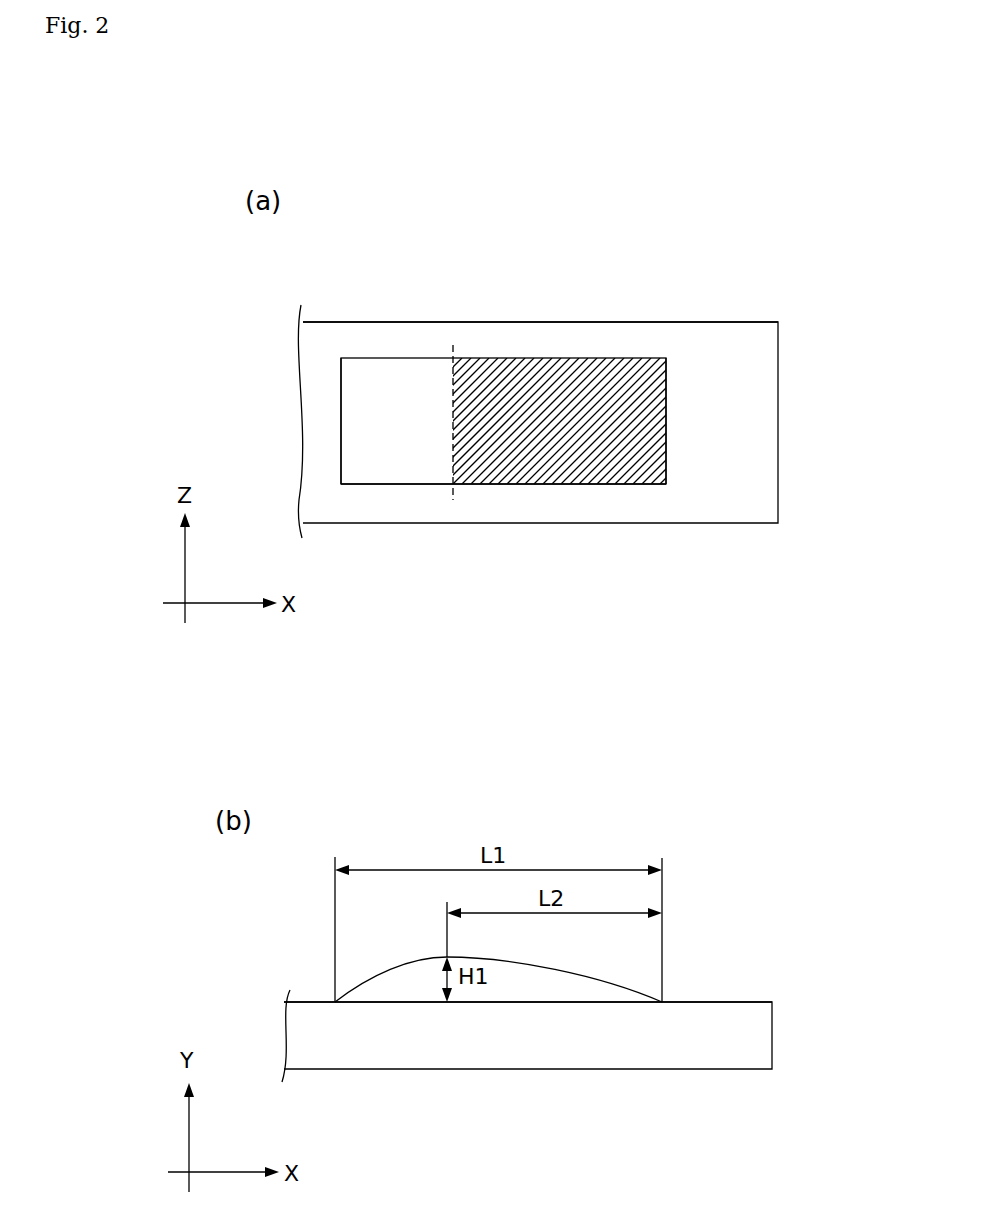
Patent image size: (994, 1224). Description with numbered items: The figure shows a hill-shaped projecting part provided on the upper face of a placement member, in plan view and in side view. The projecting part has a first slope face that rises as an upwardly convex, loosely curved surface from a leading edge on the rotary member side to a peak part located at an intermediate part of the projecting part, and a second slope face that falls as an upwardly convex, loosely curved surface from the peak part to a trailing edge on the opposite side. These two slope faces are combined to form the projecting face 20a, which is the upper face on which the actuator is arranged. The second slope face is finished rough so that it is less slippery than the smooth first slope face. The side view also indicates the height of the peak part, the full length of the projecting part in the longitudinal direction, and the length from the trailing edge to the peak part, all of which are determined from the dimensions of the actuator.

The projecting face 20a is at (666, 357).